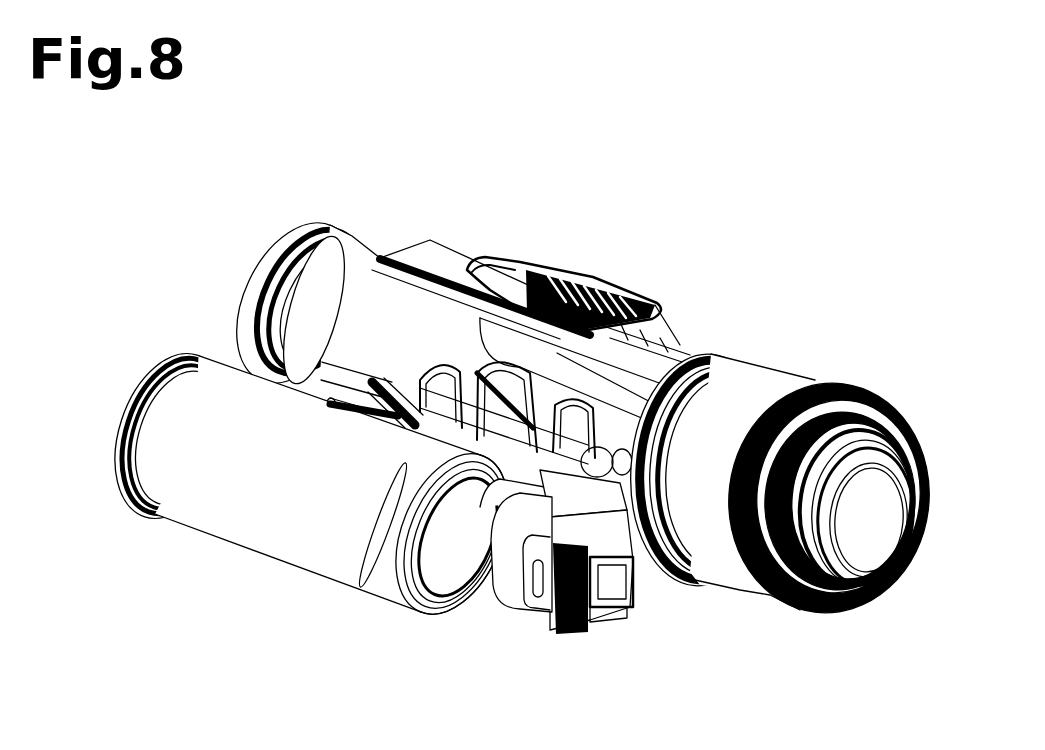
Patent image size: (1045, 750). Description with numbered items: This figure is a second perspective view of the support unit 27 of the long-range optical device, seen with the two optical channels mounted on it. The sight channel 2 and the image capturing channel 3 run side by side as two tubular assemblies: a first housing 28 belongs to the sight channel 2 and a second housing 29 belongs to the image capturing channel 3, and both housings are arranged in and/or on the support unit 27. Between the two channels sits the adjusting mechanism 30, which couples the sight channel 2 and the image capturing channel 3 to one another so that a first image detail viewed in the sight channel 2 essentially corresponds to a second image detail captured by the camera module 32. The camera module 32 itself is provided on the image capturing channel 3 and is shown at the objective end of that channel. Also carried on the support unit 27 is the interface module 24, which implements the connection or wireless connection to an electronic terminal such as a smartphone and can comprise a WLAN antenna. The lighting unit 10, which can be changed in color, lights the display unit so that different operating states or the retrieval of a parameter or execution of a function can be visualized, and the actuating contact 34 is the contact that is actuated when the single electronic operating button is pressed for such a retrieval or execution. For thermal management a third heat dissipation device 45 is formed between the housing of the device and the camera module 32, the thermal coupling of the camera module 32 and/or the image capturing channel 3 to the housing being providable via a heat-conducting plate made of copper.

The sight channel 2 is at (238, 250).
The image capturing channel 3 is at (123, 377).
The lighting unit 10 is at (637, 265).
The interface module 24 is at (460, 253).
The support unit 27 is at (255, 505).
The first housing 28 is at (342, 262).
The second housing 29 is at (195, 458).
The adjusting mechanism 30 is at (580, 410).
The camera module 32 is at (542, 608).
The actuating contact 34 is at (713, 333).
The third heat dissipation device 45 is at (633, 578).